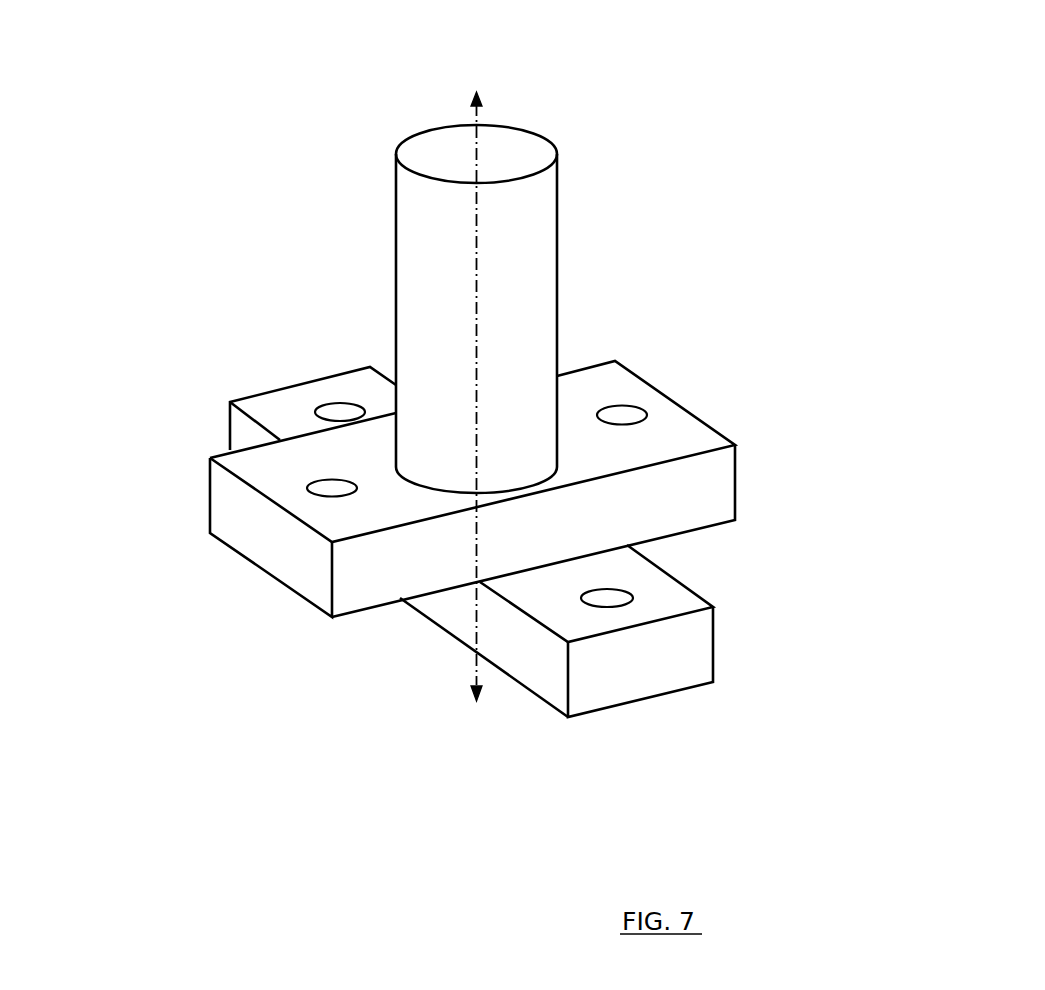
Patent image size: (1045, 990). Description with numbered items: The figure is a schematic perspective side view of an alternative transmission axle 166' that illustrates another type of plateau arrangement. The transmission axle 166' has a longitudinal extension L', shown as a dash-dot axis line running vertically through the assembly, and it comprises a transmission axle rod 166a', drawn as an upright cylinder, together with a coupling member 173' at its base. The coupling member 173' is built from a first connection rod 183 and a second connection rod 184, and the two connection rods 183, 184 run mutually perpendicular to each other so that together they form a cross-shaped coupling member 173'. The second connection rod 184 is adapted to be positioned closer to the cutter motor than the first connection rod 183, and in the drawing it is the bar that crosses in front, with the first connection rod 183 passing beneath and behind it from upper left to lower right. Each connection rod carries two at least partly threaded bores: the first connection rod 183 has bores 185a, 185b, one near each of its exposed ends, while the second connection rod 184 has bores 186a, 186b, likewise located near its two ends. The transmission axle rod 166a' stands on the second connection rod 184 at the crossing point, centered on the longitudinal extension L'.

The transmission axle 166' is at (346, 369).
The transmission axle rod 166a' is at (392, 309).
The longitudinal extension L' is at (544, 396).
The coupling member 173' is at (444, 492).
The first connection rod 183 is at (247, 430).
The second connection rod 184 is at (262, 540).
The at least partly threaded bore 185a is at (333, 408).
The at least partly threaded bore 185b is at (610, 597).
The at least partly threaded bore 186a is at (308, 489).
The at least partly threaded bore 186b is at (622, 417).